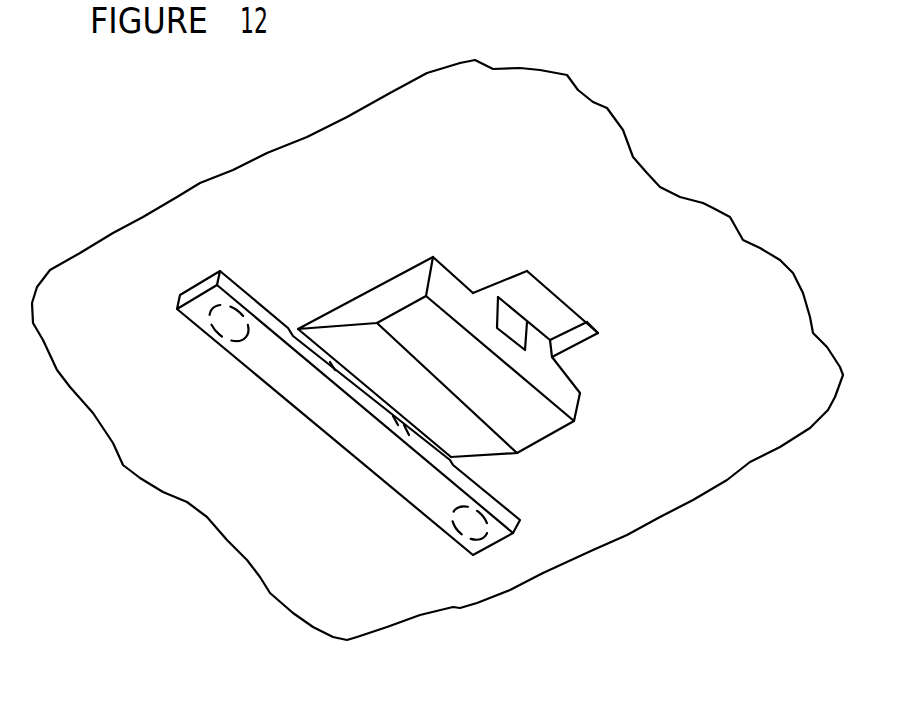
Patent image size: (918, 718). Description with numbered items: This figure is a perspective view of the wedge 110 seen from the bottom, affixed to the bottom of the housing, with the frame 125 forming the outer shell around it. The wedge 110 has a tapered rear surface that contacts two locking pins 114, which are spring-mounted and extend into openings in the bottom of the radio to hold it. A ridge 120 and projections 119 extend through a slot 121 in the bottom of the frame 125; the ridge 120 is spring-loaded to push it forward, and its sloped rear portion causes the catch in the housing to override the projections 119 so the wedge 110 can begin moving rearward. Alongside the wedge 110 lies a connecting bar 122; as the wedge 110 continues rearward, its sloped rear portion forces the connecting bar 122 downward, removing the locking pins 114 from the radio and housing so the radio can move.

The wedge 110 is at (369, 306).
The locking pins 114 is at (215, 322).
The projections 119 is at (488, 295).
The ridge 120 is at (516, 340).
The slot 121 is at (508, 281).
The connecting bar 122 is at (322, 420).
The frame 125 is at (695, 475).